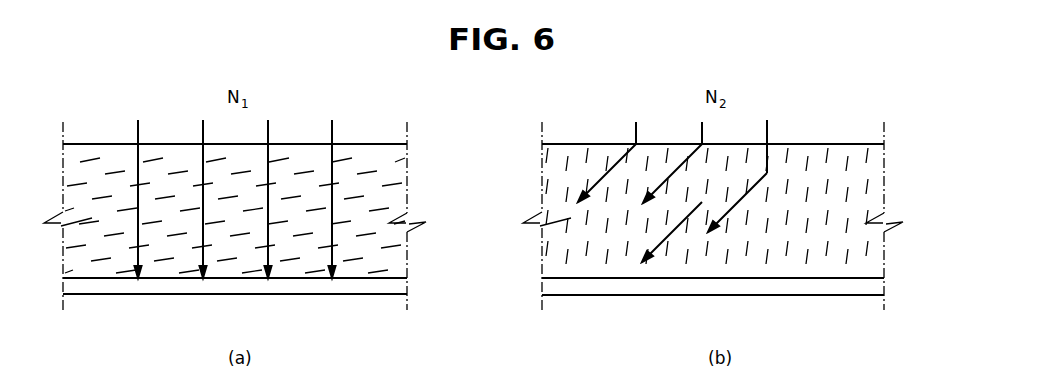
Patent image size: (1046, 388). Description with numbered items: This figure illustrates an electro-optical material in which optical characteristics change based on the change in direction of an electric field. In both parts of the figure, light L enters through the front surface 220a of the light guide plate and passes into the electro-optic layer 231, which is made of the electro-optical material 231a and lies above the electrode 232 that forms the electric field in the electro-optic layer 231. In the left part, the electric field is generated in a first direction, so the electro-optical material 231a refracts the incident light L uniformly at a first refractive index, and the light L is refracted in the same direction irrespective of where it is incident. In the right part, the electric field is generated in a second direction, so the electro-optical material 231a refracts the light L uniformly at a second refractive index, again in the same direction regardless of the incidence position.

The front surface 220a is at (393, 144).
The electro-optic layer 231 is at (403, 186).
The electro-optical material 231a is at (318, 263).
The electrode 232 is at (407, 285).
The light L is at (147, 144).